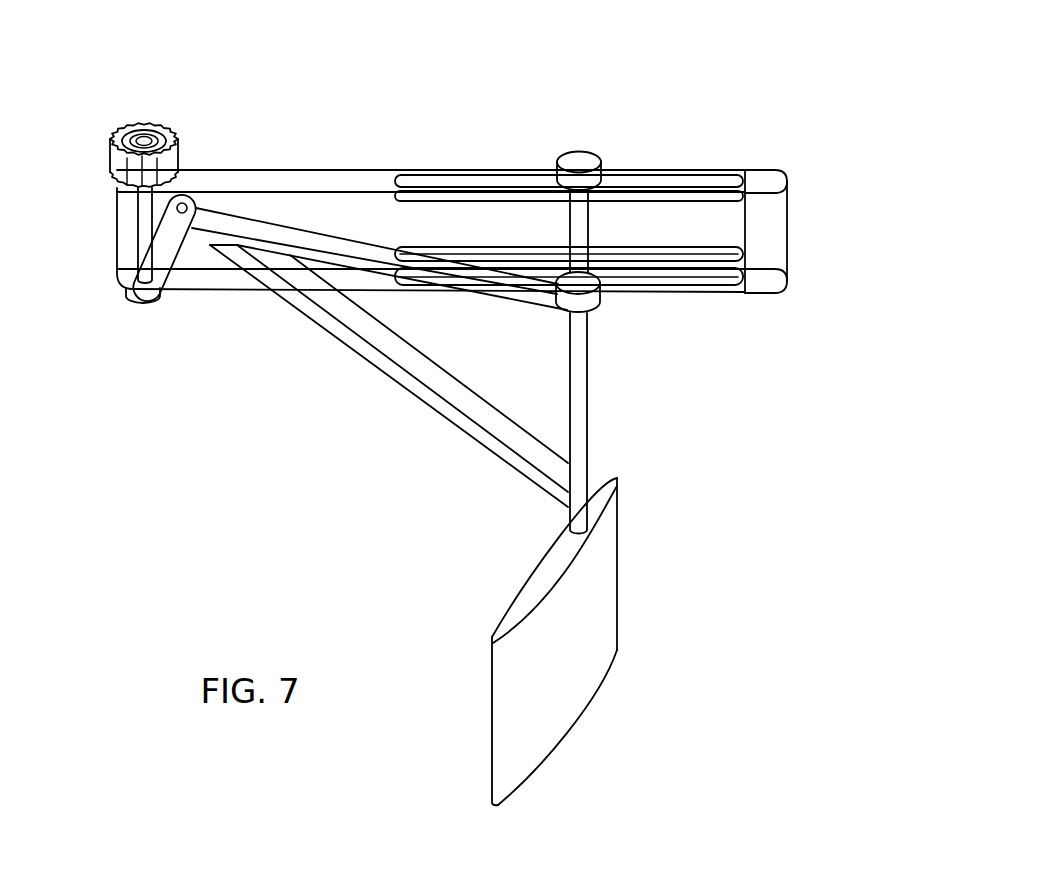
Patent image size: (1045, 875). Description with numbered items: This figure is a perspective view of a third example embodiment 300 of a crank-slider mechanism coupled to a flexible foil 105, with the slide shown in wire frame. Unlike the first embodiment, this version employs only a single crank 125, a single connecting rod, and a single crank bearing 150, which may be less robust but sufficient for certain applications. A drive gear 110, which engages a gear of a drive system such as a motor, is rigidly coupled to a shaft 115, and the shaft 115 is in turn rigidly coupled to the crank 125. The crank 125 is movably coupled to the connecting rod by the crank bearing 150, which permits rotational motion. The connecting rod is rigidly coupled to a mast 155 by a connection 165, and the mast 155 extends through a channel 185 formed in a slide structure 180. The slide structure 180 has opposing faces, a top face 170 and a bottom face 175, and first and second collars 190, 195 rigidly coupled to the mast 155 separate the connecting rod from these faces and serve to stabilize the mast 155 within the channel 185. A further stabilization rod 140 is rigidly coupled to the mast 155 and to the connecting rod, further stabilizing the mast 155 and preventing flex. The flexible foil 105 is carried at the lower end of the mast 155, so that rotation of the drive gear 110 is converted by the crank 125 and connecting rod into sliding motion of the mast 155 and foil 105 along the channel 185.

The third example embodiment 300 is at (650, 42).
The flexible foil 105 is at (618, 597).
The drive gear 110 is at (110, 152).
The shaft 115 is at (138, 234).
The second crank 125 is at (160, 280).
The stabilization rod 140 is at (307, 302).
The second crank bearing 150 is at (185, 202).
The mast 155 is at (592, 405).
The second connection 165 is at (592, 314).
The top face 170 is at (750, 165).
The bottom face 175 is at (750, 300).
The slide structure 180 is at (337, 225).
The channel 185 is at (702, 180).
The first collar 190 is at (600, 158).
The second collar 195 is at (598, 300).